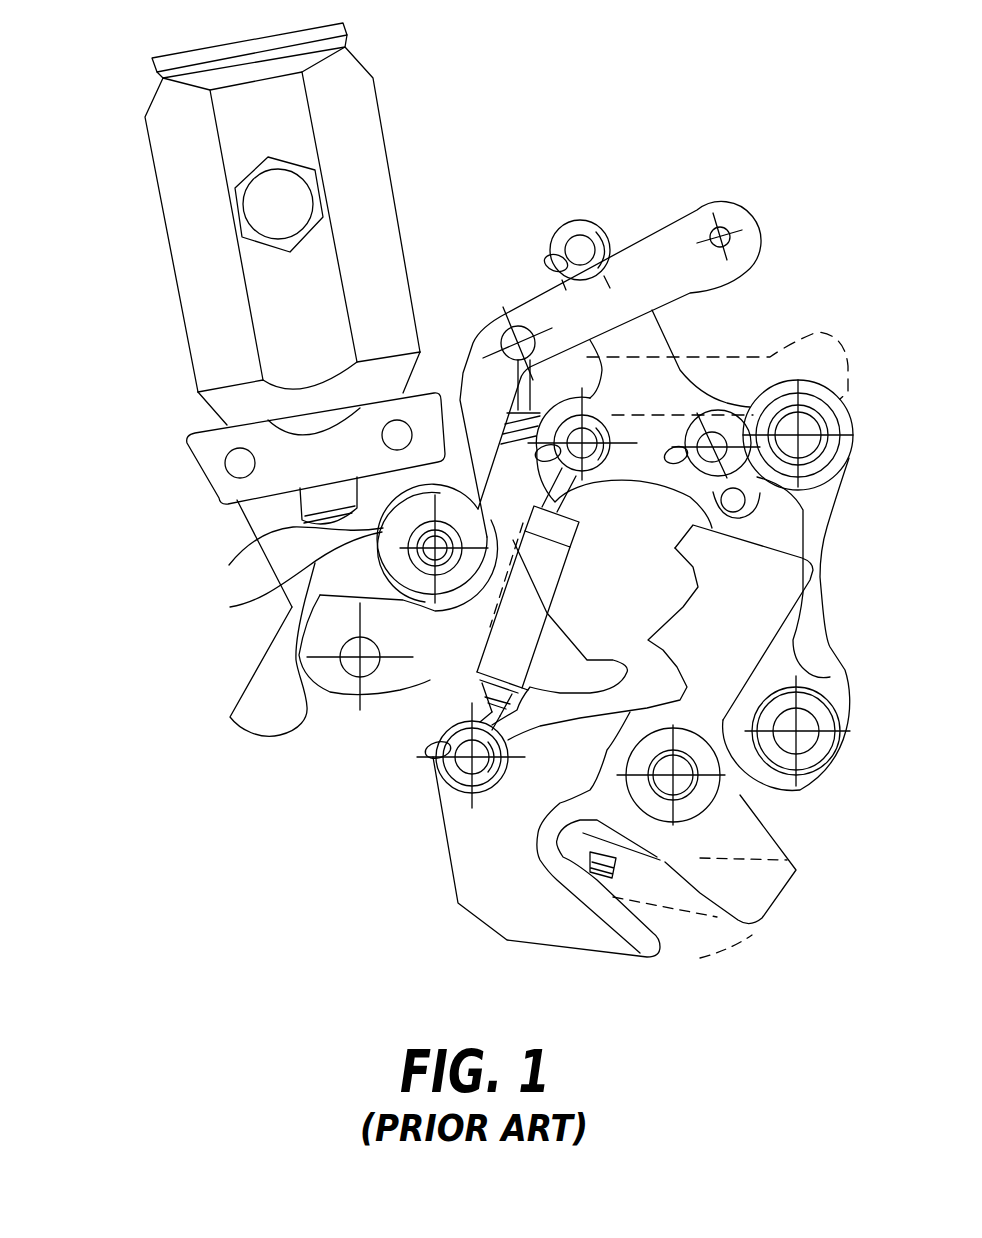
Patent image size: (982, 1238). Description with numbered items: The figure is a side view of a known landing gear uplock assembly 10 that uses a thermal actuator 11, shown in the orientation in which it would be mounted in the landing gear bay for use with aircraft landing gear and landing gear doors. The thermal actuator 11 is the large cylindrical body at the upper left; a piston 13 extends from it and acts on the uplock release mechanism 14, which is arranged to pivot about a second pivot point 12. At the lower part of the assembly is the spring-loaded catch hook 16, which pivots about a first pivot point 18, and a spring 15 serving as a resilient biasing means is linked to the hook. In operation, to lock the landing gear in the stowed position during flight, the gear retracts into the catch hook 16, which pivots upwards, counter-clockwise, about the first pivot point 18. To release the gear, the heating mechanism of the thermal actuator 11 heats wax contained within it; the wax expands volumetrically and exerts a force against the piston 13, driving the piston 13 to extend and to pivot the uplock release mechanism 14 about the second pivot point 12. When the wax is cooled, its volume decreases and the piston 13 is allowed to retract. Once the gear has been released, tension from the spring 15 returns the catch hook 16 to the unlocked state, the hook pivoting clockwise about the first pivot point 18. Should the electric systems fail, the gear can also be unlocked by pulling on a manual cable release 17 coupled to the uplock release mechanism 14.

The uplock assembly 10 is at (546, 94).
The thermal actuator 11 is at (164, 220).
The second pivot point 12 is at (231, 608).
The piston 13 is at (231, 565).
The uplock release mechanism 14 is at (251, 682).
The spring 15 is at (490, 627).
The catch hook 16 is at (500, 867).
The manual cable release 17 is at (600, 222).
The first pivot point 18 is at (673, 775).